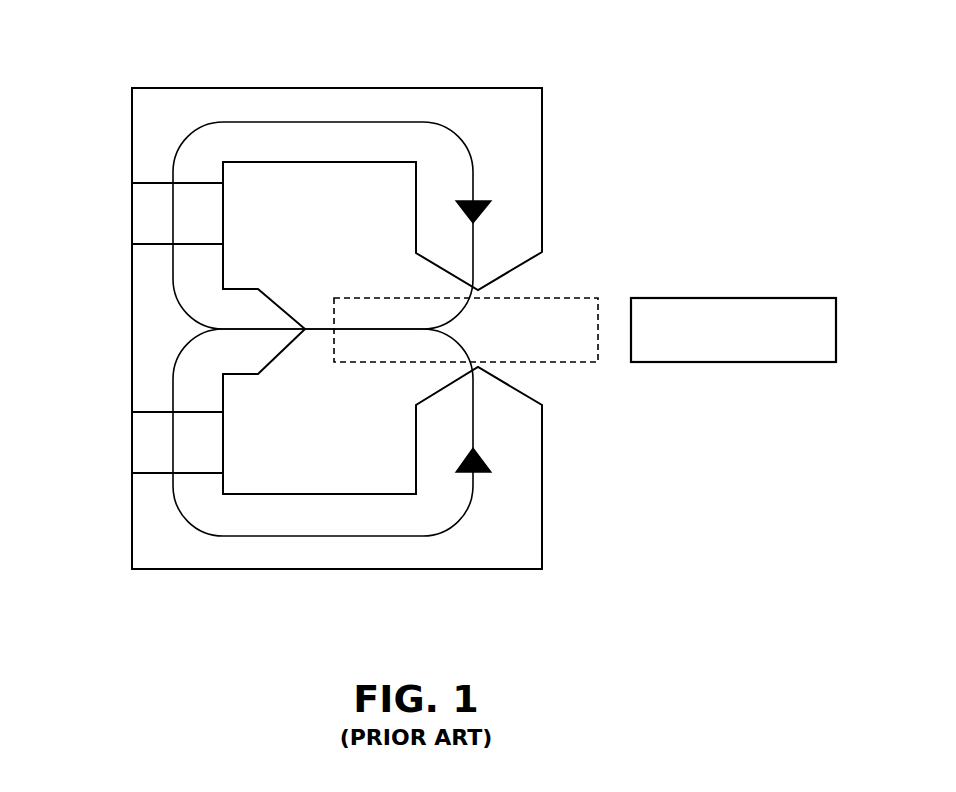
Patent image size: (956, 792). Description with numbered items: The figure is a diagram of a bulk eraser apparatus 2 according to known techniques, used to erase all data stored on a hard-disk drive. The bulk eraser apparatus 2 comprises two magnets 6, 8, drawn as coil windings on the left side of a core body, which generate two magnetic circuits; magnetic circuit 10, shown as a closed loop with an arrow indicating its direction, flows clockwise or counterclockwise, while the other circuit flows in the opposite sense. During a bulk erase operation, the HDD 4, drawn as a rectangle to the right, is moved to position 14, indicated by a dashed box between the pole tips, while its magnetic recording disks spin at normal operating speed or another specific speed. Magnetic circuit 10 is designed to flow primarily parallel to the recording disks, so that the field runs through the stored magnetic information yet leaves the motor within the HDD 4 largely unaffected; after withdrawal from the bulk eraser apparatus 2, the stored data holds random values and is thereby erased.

The bulk eraser apparatus 2 is at (187, 87).
The HDD 4 is at (701, 298).
The magnet 6 is at (131, 212).
The magnet 8 is at (131, 442).
The magnetic circuit 10 is at (178, 150).
The position 14 is at (568, 298).